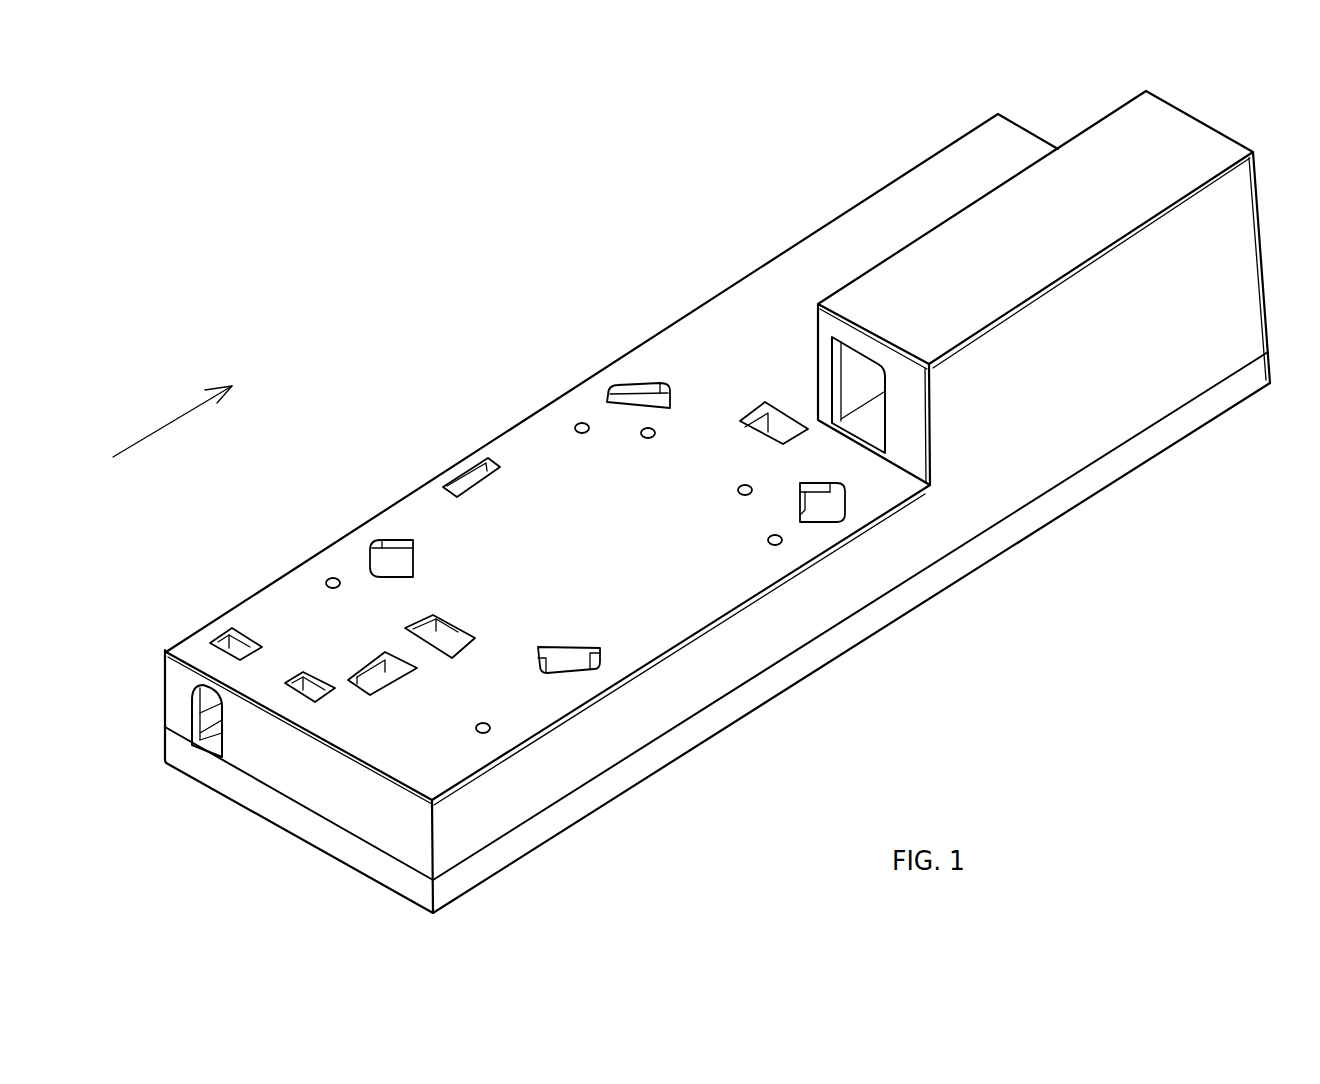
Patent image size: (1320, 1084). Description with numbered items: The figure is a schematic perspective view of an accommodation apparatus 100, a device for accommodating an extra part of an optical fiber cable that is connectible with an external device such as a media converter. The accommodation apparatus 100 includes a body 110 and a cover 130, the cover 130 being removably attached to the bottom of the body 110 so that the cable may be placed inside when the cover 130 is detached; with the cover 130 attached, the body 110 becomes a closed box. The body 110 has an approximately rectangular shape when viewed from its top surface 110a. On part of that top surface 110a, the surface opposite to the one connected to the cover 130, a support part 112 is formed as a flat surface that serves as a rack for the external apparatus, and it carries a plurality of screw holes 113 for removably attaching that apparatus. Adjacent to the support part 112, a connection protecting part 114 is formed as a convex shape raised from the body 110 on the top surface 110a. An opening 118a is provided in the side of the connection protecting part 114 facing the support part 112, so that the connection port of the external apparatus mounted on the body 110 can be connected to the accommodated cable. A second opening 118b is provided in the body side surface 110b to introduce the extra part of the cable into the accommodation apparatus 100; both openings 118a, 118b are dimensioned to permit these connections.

The accommodation apparatus 100 is at (500, 164).
The body 110 is at (706, 516).
The top surface 110a is at (690, 574).
The side surface 110b is at (717, 535).
The support part 112 is at (603, 527).
The screw holes 113 is at (554, 528).
The connection protecting part 114 is at (1021, 271).
The opening 118a is at (848, 378).
The opening 118b is at (200, 743).
The cover 130 is at (645, 763).